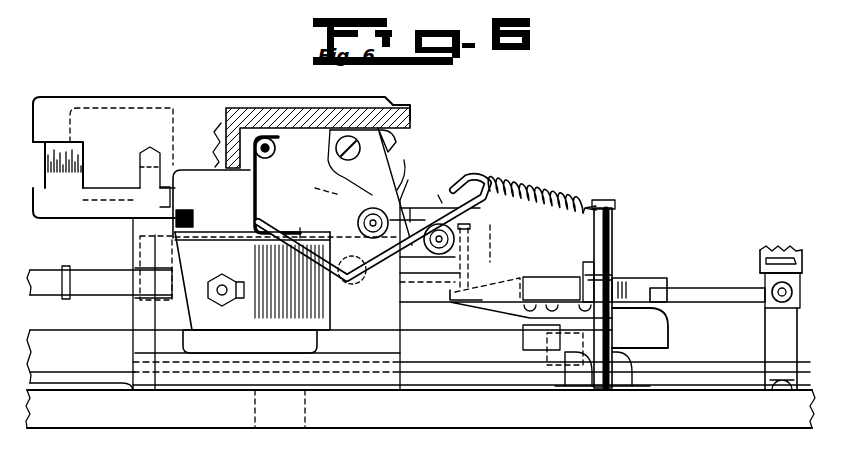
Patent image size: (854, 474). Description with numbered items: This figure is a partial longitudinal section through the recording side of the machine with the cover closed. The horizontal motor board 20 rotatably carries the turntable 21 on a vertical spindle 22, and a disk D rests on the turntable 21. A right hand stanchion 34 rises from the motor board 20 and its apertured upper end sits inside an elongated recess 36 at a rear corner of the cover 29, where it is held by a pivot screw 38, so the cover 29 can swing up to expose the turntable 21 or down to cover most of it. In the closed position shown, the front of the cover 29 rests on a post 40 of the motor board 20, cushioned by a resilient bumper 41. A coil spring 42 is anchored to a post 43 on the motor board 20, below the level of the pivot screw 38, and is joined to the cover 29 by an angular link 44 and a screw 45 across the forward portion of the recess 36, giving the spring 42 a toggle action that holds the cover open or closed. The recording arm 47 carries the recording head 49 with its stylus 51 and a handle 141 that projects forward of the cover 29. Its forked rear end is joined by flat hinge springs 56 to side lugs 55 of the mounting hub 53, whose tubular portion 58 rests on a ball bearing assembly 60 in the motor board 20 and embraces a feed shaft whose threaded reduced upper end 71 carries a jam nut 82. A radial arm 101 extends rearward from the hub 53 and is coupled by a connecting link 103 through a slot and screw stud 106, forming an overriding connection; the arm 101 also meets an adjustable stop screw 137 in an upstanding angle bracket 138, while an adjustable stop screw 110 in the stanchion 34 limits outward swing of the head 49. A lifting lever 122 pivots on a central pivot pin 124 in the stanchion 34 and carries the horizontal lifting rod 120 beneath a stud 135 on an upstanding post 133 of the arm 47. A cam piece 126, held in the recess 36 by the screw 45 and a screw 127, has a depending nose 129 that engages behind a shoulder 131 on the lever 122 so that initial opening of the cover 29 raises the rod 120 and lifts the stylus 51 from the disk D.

The motor board 20 is at (378, 430).
The turntable 21 is at (62, 330).
The vertical spindle 22 is at (268, 332).
The cover 29 is at (150, 84).
The right hand stanchion 34 is at (406, 346).
The recess 36 is at (242, 176).
The pivot screw 38 is at (347, 134).
The post 40 is at (137, 240).
The resilient bumper 41 is at (112, 222).
The coil spring 42 is at (556, 196).
The post 43 is at (613, 242).
The link 44 is at (255, 200).
The screw 45 is at (277, 146).
The recording arm 47 is at (508, 280).
The recording head 49 is at (222, 228).
The stylus 51 is at (224, 334).
The mounting hub 53 is at (681, 338).
The side lugs 55 is at (628, 282).
The flat hinge springs 56 is at (616, 326).
The tubular portion 58 is at (636, 364).
The ball bearing assembly 60 is at (634, 385).
The threaded reduced upper end 71 is at (588, 262).
The jam nut 82 is at (582, 268).
The radial arm 101 is at (712, 290).
The connecting link 103 is at (762, 250).
The screw stud 106 is at (760, 262).
The adjustable stop screw 110 is at (356, 290).
The lifting rod 120 is at (462, 240).
The lifting lever 122 is at (409, 178).
The central pivot pin 124 is at (356, 219).
The cam piece 126 is at (300, 172).
The screw 127 is at (393, 141).
The depending nose 129 is at (403, 163).
The shoulder 131 is at (326, 194).
The post 133 is at (488, 220).
The stud 135 is at (446, 197).
The adjustable stop screw 137 is at (768, 298).
The angle bracket 138 is at (768, 357).
The handle 141 is at (56, 262).
The disk D is at (108, 328).